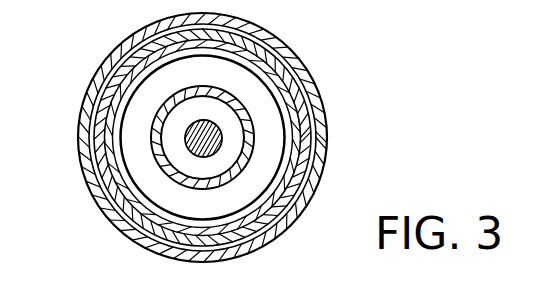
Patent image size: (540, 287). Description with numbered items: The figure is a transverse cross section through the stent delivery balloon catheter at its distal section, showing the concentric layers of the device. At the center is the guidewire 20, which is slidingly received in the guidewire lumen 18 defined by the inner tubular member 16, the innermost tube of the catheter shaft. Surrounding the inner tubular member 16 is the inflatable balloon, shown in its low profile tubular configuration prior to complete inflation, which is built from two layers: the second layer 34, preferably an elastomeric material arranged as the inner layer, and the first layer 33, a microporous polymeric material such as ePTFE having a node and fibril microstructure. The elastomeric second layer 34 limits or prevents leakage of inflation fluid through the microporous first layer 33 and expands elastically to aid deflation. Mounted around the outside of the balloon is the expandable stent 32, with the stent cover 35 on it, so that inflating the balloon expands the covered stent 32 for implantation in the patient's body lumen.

The inner tubular member 16 is at (272, 172).
The guidewire lumen 18 is at (185, 158).
The guidewire 20 is at (216, 125).
The expandable stent 32 is at (95, 110).
The first layer 33 is at (296, 104).
The second layer 34 is at (288, 137).
The stent cover 35 is at (103, 75).